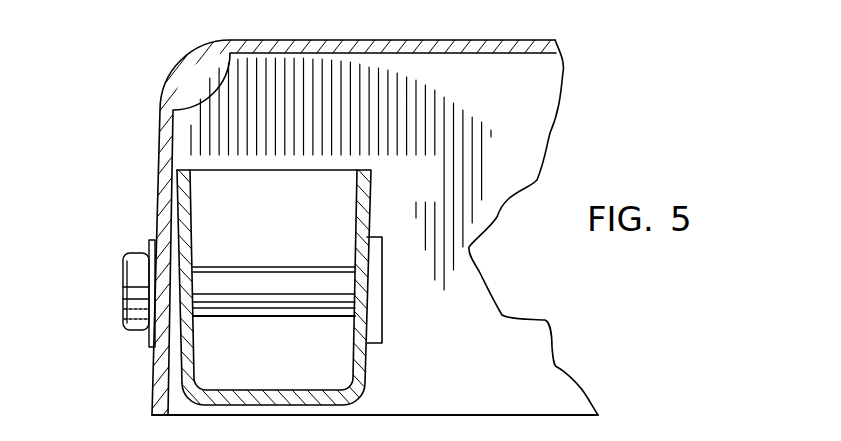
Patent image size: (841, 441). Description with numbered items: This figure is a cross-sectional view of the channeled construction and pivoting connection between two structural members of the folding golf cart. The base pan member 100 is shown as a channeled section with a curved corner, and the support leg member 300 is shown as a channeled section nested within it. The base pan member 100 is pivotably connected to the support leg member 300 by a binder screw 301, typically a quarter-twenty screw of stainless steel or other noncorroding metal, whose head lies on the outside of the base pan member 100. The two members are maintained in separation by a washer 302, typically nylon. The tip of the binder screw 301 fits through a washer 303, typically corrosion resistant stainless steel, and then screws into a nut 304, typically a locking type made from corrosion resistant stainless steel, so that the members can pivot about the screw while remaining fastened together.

The base pan member 100 is at (440, 42).
The support leg member 300 is at (364, 200).
The binder screw 301 is at (126, 258).
The washer 302 is at (175, 344).
The washer 303 is at (152, 338).
The nut 304 is at (377, 344).